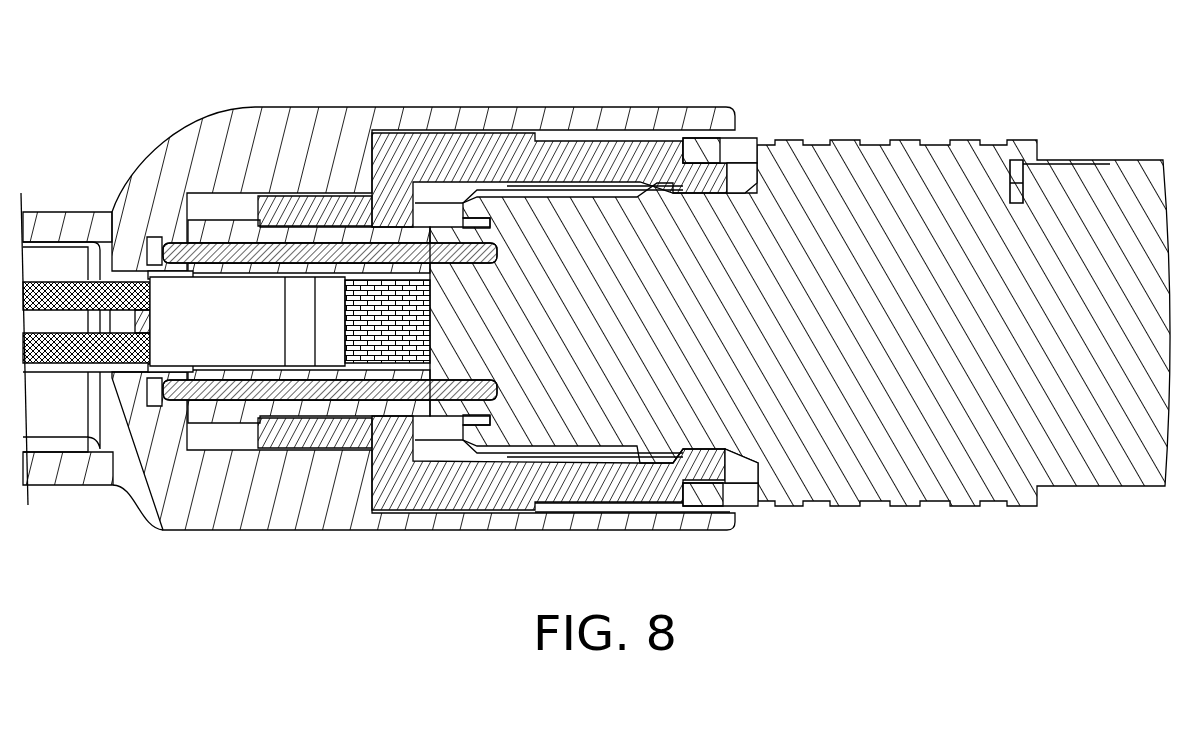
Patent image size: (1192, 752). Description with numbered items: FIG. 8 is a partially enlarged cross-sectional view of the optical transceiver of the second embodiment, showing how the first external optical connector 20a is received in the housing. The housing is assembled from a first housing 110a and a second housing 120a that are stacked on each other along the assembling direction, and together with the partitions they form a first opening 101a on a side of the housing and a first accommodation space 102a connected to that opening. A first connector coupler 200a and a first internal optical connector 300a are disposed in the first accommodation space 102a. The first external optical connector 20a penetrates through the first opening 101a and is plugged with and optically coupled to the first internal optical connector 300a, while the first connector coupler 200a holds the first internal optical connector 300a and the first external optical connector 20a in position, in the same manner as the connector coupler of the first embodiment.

The first external optical connector 20a is at (1008, 128).
The first opening 101a is at (740, 512).
The first accommodation space 102a is at (655, 512).
The first housing 110a is at (453, 535).
The second housing 120a is at (452, 106).
The first connector coupler 200a is at (258, 207).
The first internal optical connector 300a is at (148, 276).